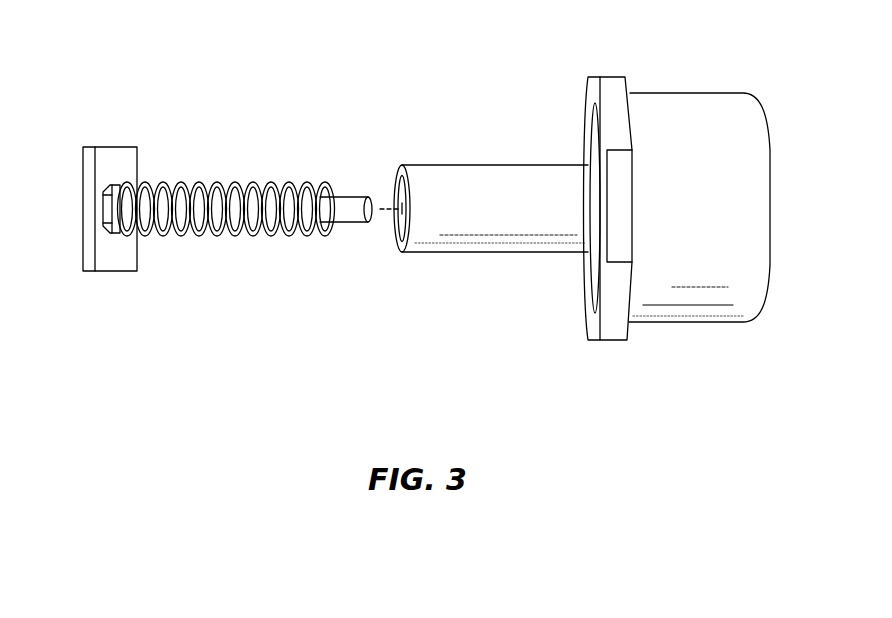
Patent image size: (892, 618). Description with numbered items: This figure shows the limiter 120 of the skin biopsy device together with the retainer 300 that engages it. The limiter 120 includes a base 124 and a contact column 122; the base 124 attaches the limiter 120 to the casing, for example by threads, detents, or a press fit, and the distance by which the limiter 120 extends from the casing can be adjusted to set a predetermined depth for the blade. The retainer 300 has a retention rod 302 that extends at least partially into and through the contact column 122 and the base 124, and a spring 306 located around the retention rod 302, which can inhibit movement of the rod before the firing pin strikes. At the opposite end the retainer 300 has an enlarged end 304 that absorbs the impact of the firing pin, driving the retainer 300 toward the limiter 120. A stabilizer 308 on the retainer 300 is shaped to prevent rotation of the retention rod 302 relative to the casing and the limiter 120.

The limiter 120 is at (567, 412).
The contact column 122 is at (511, 212).
The base 124 is at (688, 297).
The retainer 300 is at (200, 260).
The retention rod 302 is at (357, 222).
The enlarged end 304 is at (108, 272).
The spring 306 is at (238, 183).
The stabilizer 308 is at (113, 185).